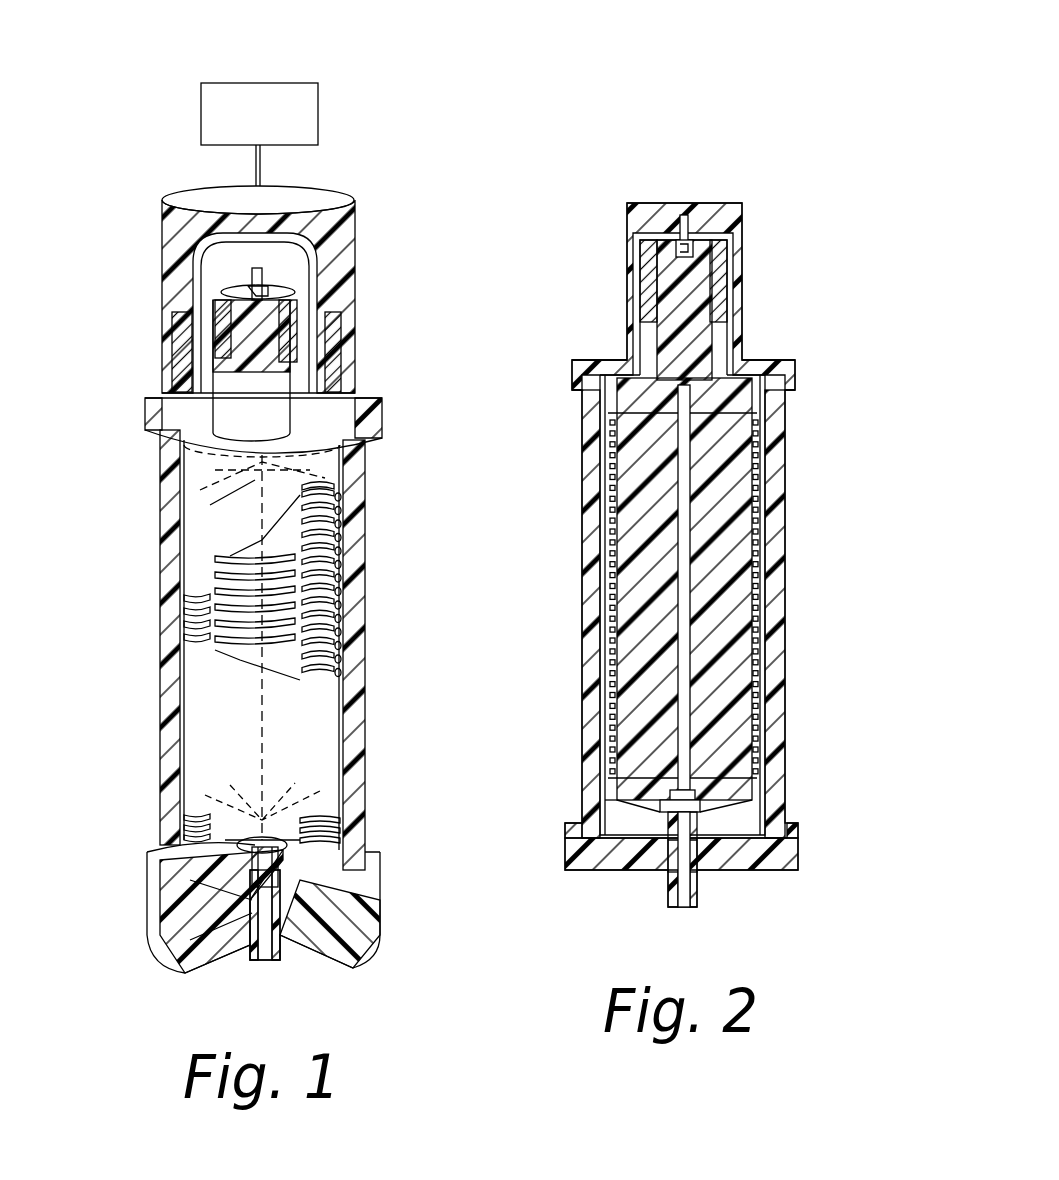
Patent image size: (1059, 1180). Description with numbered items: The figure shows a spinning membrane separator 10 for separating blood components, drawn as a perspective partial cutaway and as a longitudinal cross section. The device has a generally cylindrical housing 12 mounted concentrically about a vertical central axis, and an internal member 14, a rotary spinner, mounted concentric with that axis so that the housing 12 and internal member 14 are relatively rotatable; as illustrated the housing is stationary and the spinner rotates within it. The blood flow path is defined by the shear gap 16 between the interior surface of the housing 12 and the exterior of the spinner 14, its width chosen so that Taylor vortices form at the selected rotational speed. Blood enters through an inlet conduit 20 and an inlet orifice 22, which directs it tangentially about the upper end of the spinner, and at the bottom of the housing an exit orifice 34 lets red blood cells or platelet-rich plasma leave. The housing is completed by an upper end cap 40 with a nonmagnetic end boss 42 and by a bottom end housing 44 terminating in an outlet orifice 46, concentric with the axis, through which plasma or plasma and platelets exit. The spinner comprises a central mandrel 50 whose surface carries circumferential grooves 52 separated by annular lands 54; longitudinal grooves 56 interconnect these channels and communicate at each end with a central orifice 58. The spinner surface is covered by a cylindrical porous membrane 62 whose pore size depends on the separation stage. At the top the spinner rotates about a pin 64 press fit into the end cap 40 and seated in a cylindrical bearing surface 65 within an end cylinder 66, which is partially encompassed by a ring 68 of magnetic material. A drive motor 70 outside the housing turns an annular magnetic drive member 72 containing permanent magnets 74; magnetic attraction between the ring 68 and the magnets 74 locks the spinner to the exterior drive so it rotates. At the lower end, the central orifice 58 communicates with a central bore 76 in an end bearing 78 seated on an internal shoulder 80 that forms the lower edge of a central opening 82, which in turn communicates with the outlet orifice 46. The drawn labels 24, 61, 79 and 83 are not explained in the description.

In FIG. 1, the spinning membrane separator 10 is at (135, 520).
In FIG. 2, the spinning membrane separator 10 is at (606, 338).
In FIG. 1, the cylindrical housing 12 is at (261, 650).
In FIG. 2, the cylindrical housing 12 is at (679, 585).
In FIG. 1, the internal member 14 is at (311, 593).
In FIG. 2, the internal member 14 is at (728, 589).
In FIG. 1, the gap 16 is at (180, 690).
In FIG. 2, the gap 16 is at (600, 657).
In FIG. 1, the inlet conduit 20 is at (162, 394).
In FIG. 1, the inlet orifice 22 is at (182, 448).
In FIG. 2, the inlet orifice 22 is at (586, 398).
In FIG. 1, the plate stack 24 is at (311, 579).
In FIG. 2, the plate stack 24 is at (728, 595).
In FIG. 1, the exit orifice 34 is at (300, 845).
In FIG. 2, the exit orifice 34 is at (700, 806).
In FIG. 1, the upper end cap 40 is at (370, 420).
In FIG. 2, the upper end cap 40 is at (795, 372).
In FIG. 1, the end boss 42 is at (312, 290).
In FIG. 2, the end boss 42 is at (742, 224).
In FIG. 1, the bottom end housing 44 is at (378, 915).
In FIG. 2, the bottom end housing 44 is at (566, 855).
In FIG. 1, the outlet orifice 46 is at (258, 962).
In FIG. 2, the outlet orifice 46 is at (668, 892).
In FIG. 1, the central mandrel 50 is at (345, 587).
In FIG. 2, the central mandrel 50 is at (735, 680).
In FIG. 1, the circumferential grooves 52 is at (340, 540).
In FIG. 2, the circumferential grooves 52 is at (758, 640).
In FIG. 1, the annular lands 54 is at (340, 515).
In FIG. 2, the annular lands 54 is at (758, 600).
In FIG. 1, the longitudinal grooves 56 is at (340, 497).
In FIG. 1, the central orifice 58 is at (270, 725).
In FIG. 2, the central orifice 58 is at (690, 452).
In FIG. 1, the spacer 61 is at (335, 638).
In FIG. 1, the cylindrical porous membrane 62 is at (320, 750).
In FIG. 2, the cylindrical porous membrane 62 is at (605, 562).
In FIG. 1, the pin 64 is at (262, 280).
In FIG. 2, the pin 64 is at (684, 206).
In FIG. 1, the cylindrical bearing surface 65 is at (248, 286).
In FIG. 2, the cylindrical bearing surface 65 is at (676, 243).
In FIG. 1, the end cylinder 66 is at (300, 362).
In FIG. 2, the end cylinder 66 is at (700, 290).
In FIG. 1, the ring 68 is at (300, 318).
In FIG. 2, the ring 68 is at (727, 262).
In FIG. 1, the drive motor 70 is at (212, 80).
In FIG. 1, the annular magnetic drive member 72 is at (355, 212).
In FIG. 1, the permanent magnets 74 is at (178, 345).
In FIG. 1, the central bore 76 is at (255, 905).
In FIG. 2, the central bore 76 is at (686, 836).
In FIG. 1, the end bearing 78 is at (255, 915).
In FIG. 2, the end bearing 78 is at (692, 846).
In FIG. 1, the lower pin 79 is at (265, 855).
In FIG. 2, the lower pin 79 is at (697, 826).
In FIG. 1, the internal shoulder 80 is at (345, 852).
In FIG. 2, the internal shoulder 80 is at (700, 815).
In FIG. 1, the central opening 82 is at (340, 823).
In FIG. 2, the central opening 82 is at (695, 793).
In FIG. 2, the gap 83 is at (605, 800).